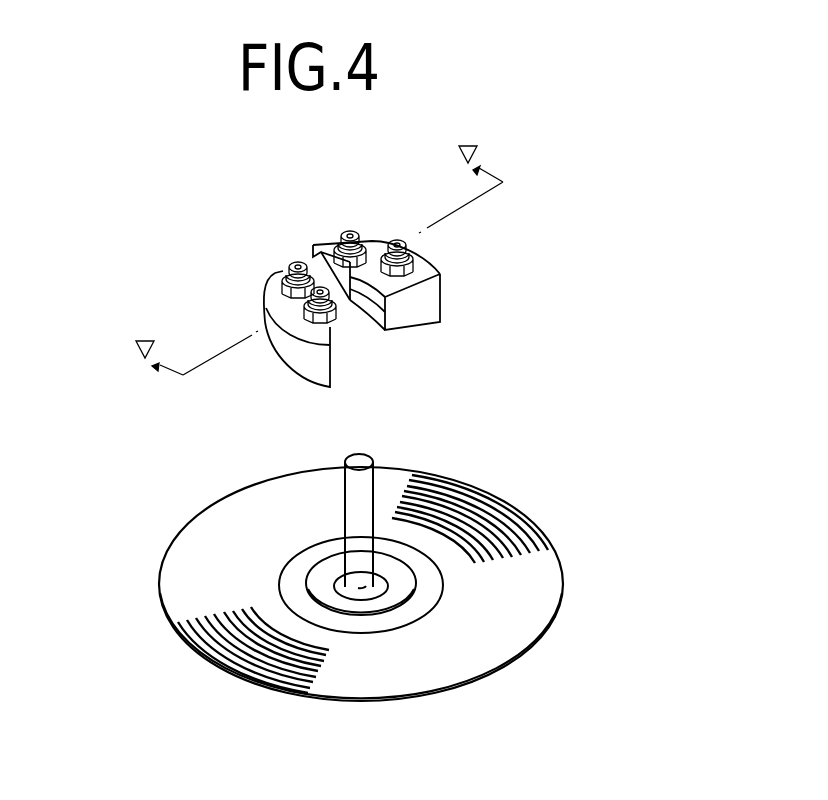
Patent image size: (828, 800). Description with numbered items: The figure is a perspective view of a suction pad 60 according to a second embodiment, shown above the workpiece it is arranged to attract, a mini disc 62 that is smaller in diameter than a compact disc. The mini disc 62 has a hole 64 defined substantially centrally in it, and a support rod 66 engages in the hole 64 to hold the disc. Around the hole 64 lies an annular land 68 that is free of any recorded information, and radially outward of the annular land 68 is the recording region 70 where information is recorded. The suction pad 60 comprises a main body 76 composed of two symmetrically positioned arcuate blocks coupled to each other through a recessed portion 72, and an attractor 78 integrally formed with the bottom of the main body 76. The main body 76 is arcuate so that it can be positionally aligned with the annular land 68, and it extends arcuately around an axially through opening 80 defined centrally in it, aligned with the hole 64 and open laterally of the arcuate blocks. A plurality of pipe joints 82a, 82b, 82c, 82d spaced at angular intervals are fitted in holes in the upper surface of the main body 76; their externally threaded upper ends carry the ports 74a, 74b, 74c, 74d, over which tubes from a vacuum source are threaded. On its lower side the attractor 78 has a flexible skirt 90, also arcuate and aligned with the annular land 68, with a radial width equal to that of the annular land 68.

The suction pad 60 is at (425, 154).
The mini disc 62 is at (557, 638).
The hole 64 is at (366, 590).
The support rod 66 is at (364, 487).
The annular land 68 is at (407, 583).
The recording region 70 is at (203, 545).
The recessed portion 72 is at (318, 262).
The port 74a is at (406, 243).
The port 74b is at (349, 233).
The port 74c is at (296, 264).
The port 74d is at (308, 310).
The main body 76 is at (446, 298).
The attractor 78 is at (391, 329).
The axially through opening 80 is at (360, 310).
The pipe joint 82a is at (420, 262).
The pipe joint 82b is at (364, 252).
The pipe joint 82c is at (284, 282).
The pipe joint 82d is at (303, 322).
The flexible skirt 90 is at (367, 318).